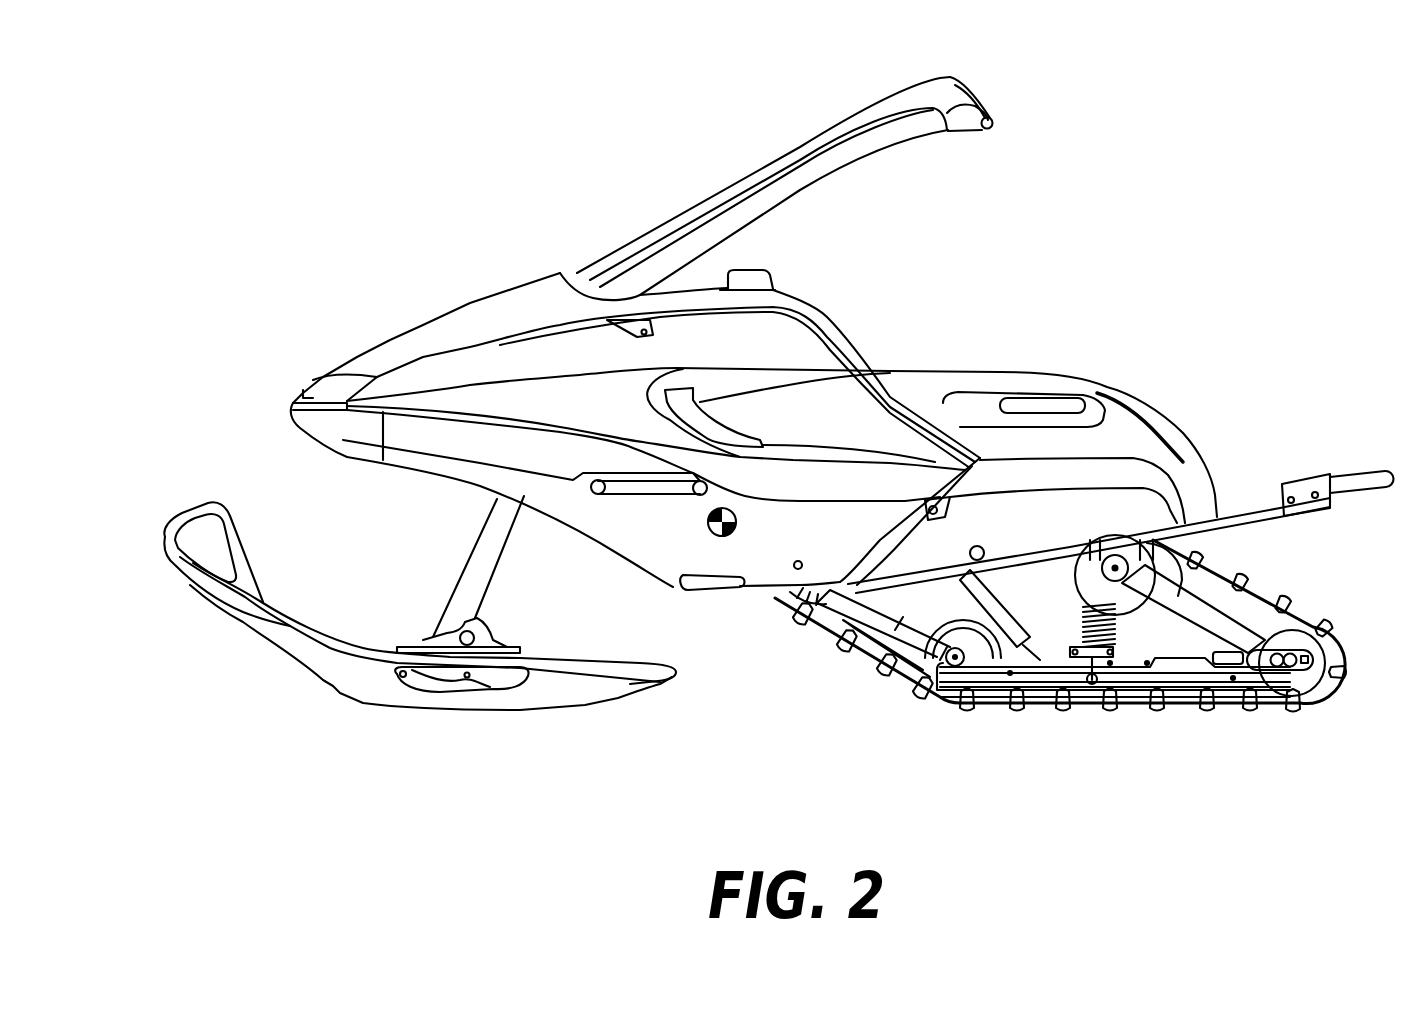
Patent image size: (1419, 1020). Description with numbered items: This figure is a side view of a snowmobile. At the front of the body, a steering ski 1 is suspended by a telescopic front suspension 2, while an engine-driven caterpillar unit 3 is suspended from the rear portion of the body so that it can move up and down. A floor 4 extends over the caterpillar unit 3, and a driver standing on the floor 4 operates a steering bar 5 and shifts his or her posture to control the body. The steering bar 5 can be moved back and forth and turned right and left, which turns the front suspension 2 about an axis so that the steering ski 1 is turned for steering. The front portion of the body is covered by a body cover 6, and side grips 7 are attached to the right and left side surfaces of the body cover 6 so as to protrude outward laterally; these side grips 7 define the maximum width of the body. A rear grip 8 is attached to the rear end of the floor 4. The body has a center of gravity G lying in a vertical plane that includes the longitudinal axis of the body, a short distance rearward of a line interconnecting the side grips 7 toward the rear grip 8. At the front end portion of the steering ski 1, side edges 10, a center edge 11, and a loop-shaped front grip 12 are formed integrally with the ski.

The steering ski 1 is at (236, 703).
The telescopic front suspension 2 is at (469, 566).
The engine-driven caterpillar unit 3 is at (1300, 608).
The floor 4 is at (1273, 480).
The steering bar 5 is at (985, 131).
The body cover 6 is at (455, 308).
The side grips 7 is at (658, 488).
The rear grip 8 is at (1360, 477).
The side edges 10 is at (490, 690).
The center edge 11 is at (463, 713).
The loop-shaped front grip 12 is at (190, 506).
The center of gravity G is at (714, 530).